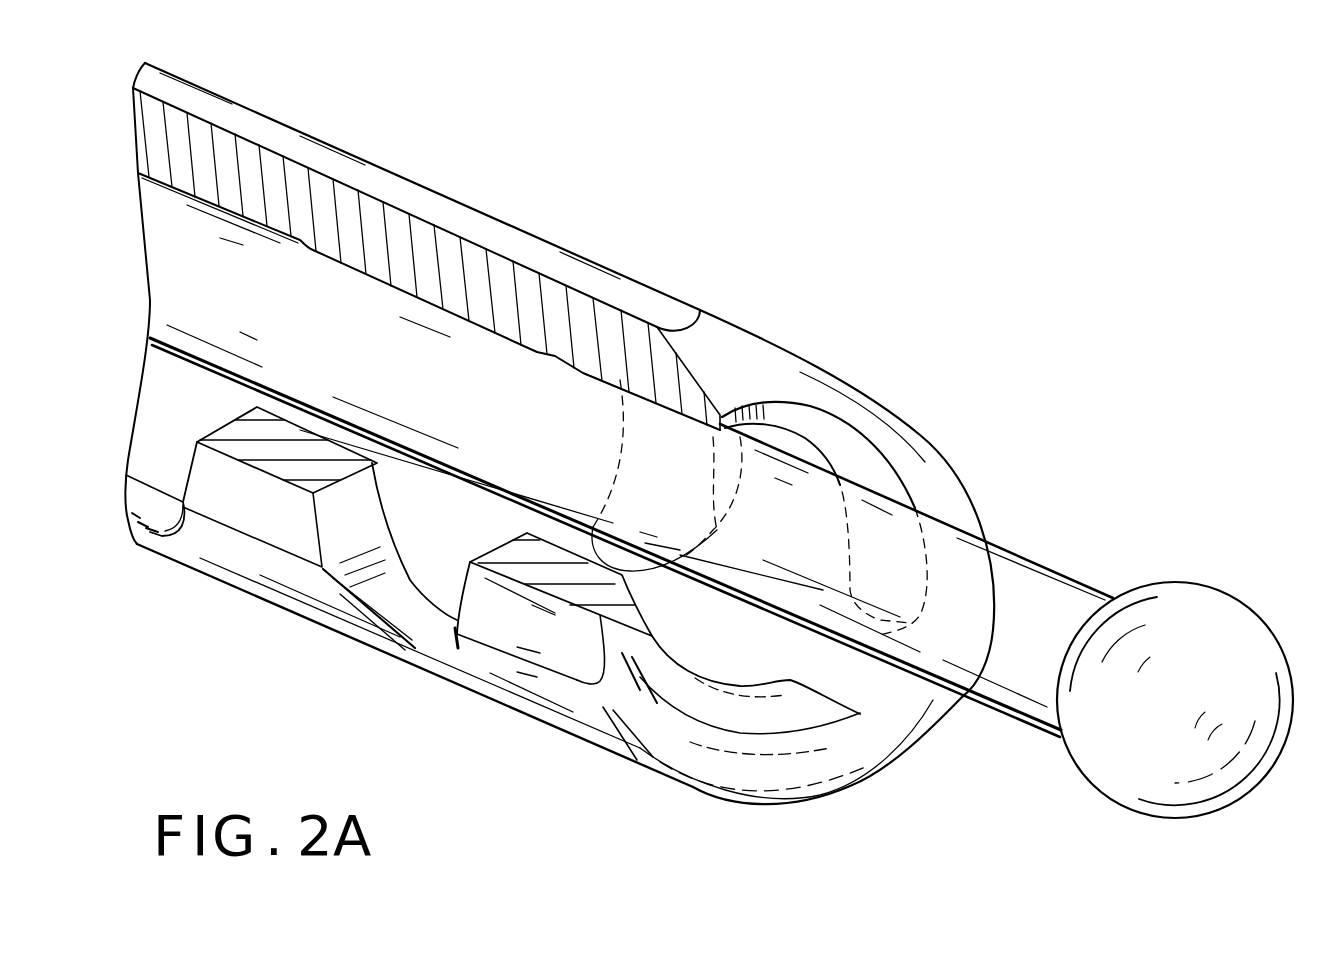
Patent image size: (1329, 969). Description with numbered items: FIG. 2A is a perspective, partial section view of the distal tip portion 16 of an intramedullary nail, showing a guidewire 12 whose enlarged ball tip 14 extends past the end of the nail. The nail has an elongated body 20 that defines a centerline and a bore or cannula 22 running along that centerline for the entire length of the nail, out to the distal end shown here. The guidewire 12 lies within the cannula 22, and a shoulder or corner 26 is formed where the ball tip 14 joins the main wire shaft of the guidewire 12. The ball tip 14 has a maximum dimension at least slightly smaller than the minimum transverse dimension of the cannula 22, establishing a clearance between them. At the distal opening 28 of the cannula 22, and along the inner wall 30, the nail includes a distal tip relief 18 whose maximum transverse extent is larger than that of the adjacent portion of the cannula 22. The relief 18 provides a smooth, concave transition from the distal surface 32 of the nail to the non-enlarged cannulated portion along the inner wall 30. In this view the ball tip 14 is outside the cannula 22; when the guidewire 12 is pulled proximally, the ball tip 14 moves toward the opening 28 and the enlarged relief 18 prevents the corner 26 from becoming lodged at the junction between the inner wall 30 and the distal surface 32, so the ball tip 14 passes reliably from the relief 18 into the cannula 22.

The guidewire 12 is at (1023, 707).
The ball tip 14 is at (1237, 638).
The distal tip portion 16 is at (872, 266).
The distal tip relief 18 is at (860, 463).
The elongated body 20 is at (428, 257).
The cannula 22 is at (430, 570).
The corner 26 is at (1110, 597).
The distal opening 28 is at (855, 677).
The inner wall 30 is at (746, 640).
The distal surface 32 is at (948, 500).